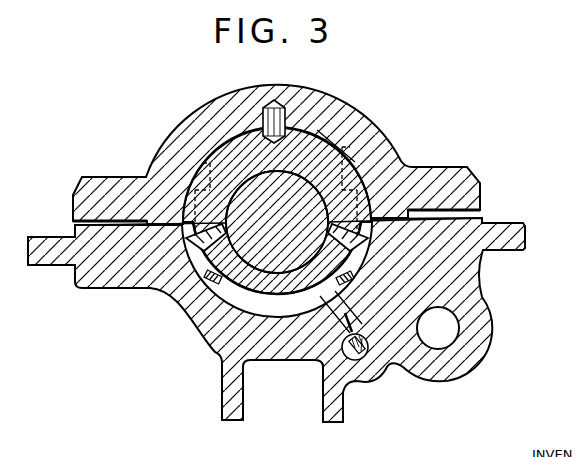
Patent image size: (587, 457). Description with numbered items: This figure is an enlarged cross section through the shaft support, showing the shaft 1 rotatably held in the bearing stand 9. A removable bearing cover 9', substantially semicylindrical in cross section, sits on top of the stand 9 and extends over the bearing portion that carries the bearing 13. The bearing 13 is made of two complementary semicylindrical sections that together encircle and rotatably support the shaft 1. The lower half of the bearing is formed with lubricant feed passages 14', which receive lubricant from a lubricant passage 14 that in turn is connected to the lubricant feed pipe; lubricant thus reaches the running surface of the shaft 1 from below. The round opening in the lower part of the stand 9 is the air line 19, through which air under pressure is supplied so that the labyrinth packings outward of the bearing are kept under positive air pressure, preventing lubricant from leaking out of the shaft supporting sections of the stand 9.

The shaft 1 is at (255, 258).
The bearing stand 9 is at (276, 320).
The bearing cover 9' is at (276, 154).
The bearing 13 is at (335, 148).
The lubricant passage 14 is at (366, 352).
The lubricant feed passages 14' is at (278, 210).
The air line 19 is at (448, 328).